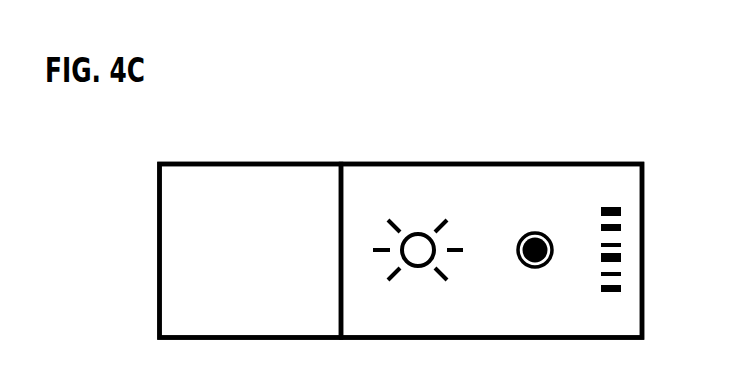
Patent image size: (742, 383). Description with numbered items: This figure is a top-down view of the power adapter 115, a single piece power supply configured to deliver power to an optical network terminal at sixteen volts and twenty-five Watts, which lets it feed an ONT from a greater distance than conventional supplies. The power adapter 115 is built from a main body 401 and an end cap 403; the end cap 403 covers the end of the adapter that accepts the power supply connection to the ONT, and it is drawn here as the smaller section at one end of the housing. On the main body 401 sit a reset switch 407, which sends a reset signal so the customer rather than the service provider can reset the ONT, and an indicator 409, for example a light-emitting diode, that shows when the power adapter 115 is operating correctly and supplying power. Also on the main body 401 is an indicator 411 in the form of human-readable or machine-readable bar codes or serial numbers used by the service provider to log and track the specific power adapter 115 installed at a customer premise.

The power adapter 115 is at (372, 113).
The main body 401 is at (467, 162).
The end cap 403 is at (260, 161).
The reset switch 407 is at (528, 232).
The indicator 409 is at (417, 232).
The indicator 411 is at (622, 228).